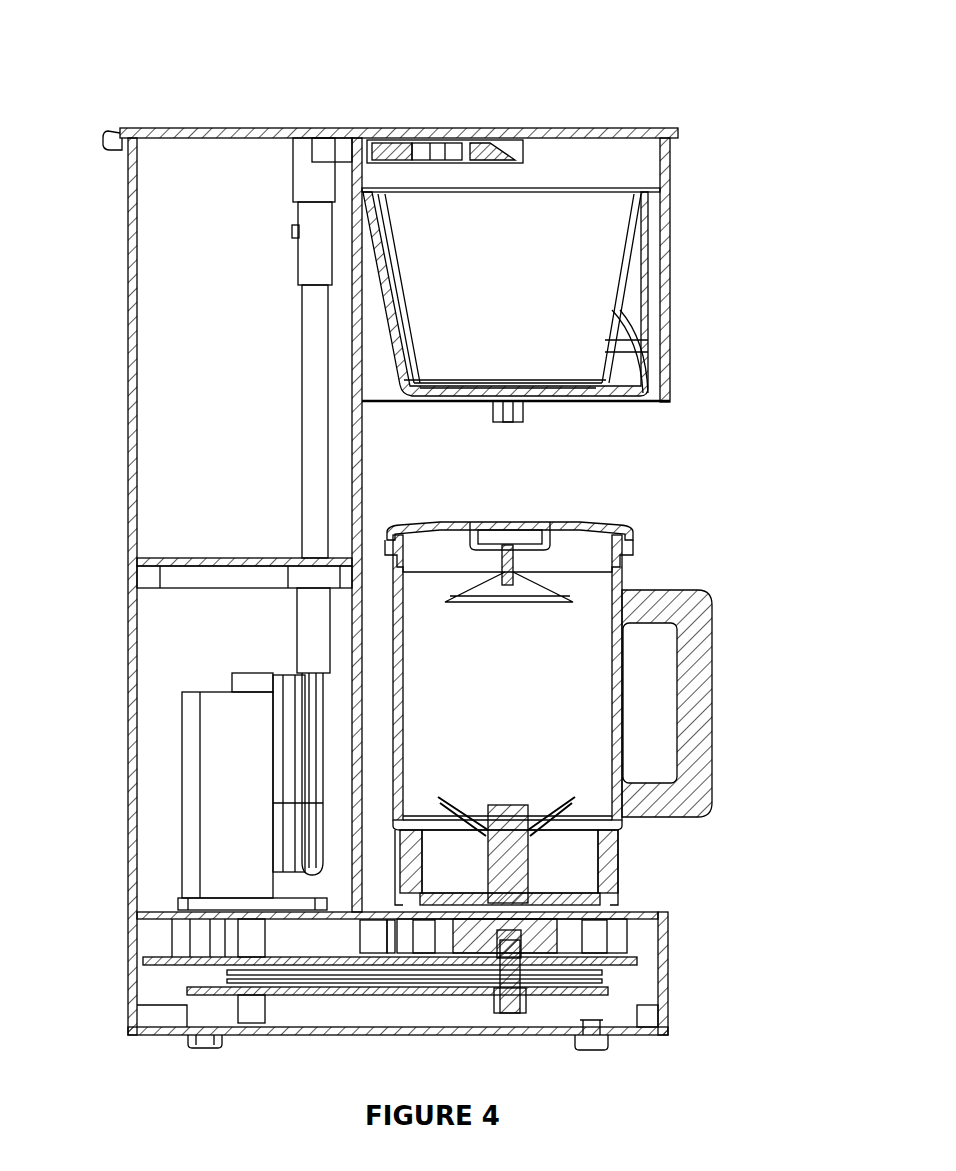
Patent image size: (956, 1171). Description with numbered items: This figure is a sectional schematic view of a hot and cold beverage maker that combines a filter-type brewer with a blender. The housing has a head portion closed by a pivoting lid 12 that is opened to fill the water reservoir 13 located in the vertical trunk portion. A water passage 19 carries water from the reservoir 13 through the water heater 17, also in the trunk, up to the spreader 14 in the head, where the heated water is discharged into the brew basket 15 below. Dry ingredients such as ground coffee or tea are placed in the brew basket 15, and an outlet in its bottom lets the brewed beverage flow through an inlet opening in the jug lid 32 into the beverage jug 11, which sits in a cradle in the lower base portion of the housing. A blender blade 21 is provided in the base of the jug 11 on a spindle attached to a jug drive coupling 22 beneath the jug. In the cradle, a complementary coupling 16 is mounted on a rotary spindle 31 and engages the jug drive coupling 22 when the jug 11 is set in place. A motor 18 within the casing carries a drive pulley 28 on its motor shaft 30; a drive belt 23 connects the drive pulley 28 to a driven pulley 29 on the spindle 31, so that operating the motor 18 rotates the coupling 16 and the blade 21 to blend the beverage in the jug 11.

The beverage jug 11 is at (722, 633).
The pivoting lid 12 is at (288, 130).
The water reservoir 13 is at (220, 310).
The spreader 14 is at (512, 155).
The brew basket 15 is at (626, 290).
The complementary coupling 16 is at (538, 942).
The water heater 17 is at (272, 770).
The motor 18 is at (178, 807).
The water passage 19 is at (300, 420).
The blender blade 21 is at (522, 798).
The jug drive coupling 22 is at (557, 915).
The drive belt 23 is at (303, 980).
The drive pulley 28 is at (237, 966).
The driven pulley 29 is at (538, 983).
The motor shaft 30 is at (237, 928).
The rotary spindle 31 is at (530, 1003).
The jug lid 32 is at (634, 522).